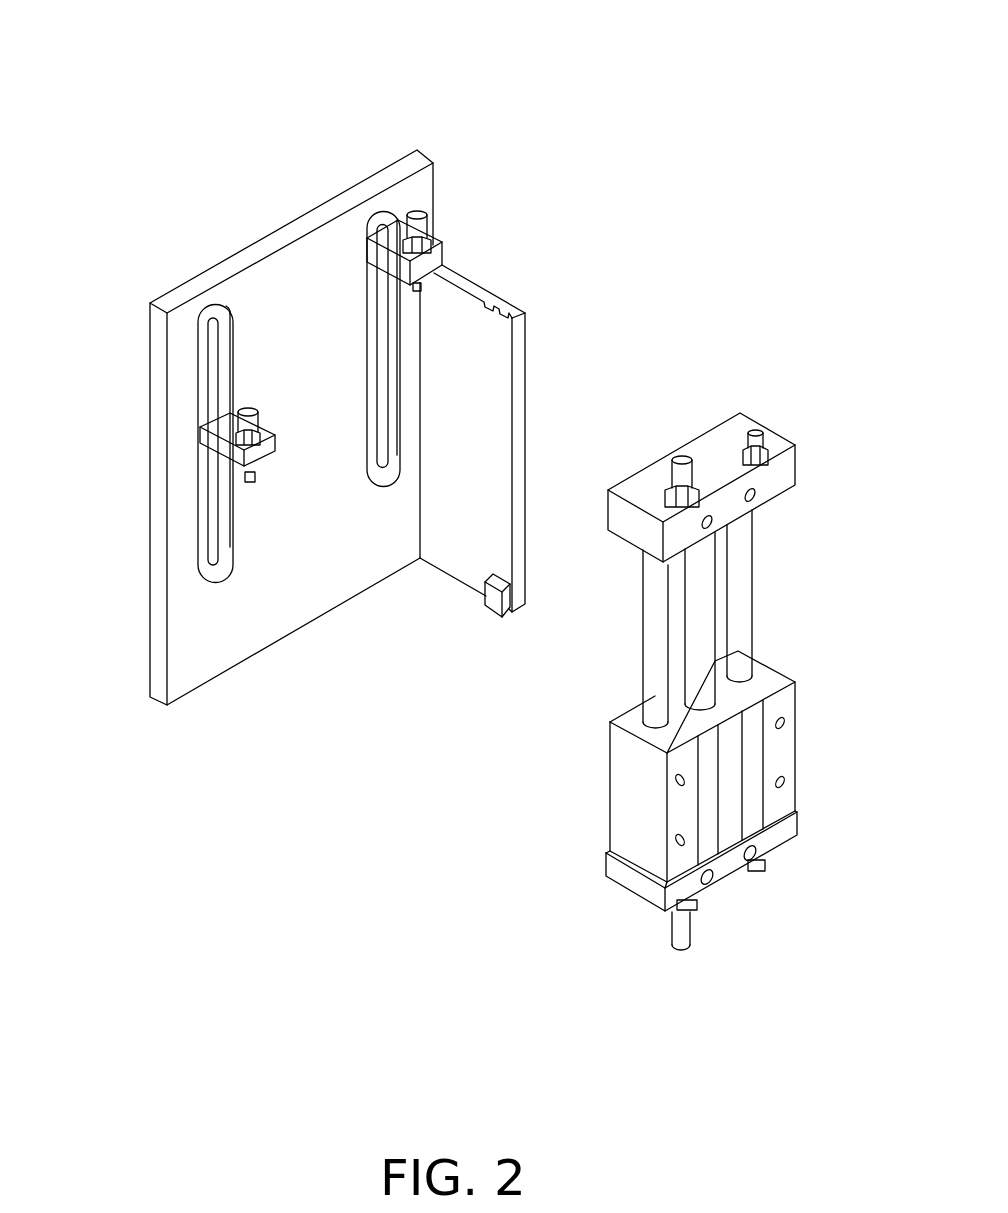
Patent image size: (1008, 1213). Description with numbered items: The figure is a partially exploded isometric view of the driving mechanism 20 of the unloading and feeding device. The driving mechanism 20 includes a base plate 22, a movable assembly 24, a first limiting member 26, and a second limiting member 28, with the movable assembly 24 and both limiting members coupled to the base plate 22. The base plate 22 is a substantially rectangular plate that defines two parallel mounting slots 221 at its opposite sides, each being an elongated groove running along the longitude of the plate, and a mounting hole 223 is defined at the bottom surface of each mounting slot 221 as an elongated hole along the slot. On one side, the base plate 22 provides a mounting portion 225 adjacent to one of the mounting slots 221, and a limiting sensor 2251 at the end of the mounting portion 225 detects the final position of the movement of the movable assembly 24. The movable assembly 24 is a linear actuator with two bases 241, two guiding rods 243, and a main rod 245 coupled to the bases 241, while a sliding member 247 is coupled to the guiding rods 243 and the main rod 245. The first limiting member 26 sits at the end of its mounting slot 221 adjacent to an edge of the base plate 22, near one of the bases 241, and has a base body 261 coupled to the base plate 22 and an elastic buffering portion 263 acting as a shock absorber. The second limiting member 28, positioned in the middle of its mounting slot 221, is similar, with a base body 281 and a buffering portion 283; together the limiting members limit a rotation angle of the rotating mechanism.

The driving mechanism 20 is at (463, 31).
The base plate 22 is at (203, 283).
The mounting slot 221 is at (203, 357).
The mounting hole 223 is at (213, 407).
The mounting portion 225 is at (518, 384).
The limiting sensor 2251 is at (497, 604).
The movable assembly 24 is at (784, 396).
The base 241 is at (639, 488).
The guiding rod 243 is at (740, 578).
The main rod 245 is at (707, 628).
The sliding member 247 is at (768, 677).
The first limiting member 26 is at (537, 200).
The base body 261 is at (425, 258).
The buffering portion 263 is at (418, 290).
The second limiting member 28 is at (75, 467).
The base body 281 is at (214, 460).
The buffering portion 283 is at (246, 482).